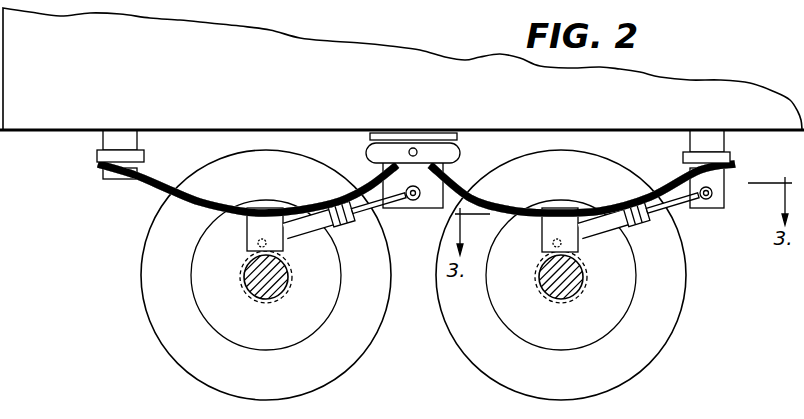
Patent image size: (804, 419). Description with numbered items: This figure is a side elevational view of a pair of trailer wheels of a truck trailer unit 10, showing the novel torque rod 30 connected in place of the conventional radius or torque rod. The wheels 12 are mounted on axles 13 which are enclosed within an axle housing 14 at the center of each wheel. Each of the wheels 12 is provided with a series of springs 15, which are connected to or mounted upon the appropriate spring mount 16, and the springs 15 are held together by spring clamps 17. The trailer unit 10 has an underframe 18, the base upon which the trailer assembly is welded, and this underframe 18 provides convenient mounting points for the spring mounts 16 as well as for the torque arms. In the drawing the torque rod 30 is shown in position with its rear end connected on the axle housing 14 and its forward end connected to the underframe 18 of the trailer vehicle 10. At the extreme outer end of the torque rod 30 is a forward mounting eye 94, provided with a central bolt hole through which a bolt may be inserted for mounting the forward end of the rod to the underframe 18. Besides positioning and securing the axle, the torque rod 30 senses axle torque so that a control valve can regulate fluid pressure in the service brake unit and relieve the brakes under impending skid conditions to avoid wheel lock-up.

The truck trailer unit 10 is at (190, 62).
The wheels 12 is at (256, 380).
The axles 13 is at (250, 276).
The axle housing 14 is at (256, 299).
The springs 15 is at (155, 180).
The spring mount 16 is at (97, 155).
The spring clamps 17 is at (259, 218).
The underframe 18 is at (110, 180).
The torque rod 30 is at (313, 243).
The forward mounting eye 94 is at (422, 202).